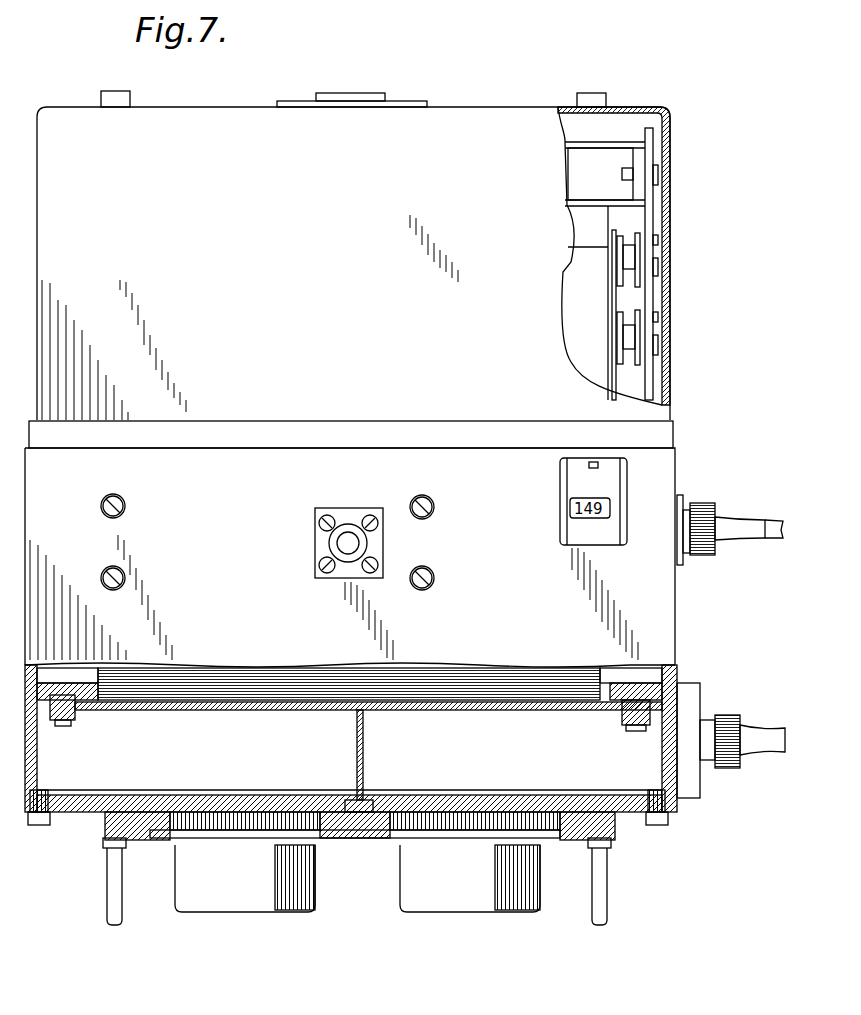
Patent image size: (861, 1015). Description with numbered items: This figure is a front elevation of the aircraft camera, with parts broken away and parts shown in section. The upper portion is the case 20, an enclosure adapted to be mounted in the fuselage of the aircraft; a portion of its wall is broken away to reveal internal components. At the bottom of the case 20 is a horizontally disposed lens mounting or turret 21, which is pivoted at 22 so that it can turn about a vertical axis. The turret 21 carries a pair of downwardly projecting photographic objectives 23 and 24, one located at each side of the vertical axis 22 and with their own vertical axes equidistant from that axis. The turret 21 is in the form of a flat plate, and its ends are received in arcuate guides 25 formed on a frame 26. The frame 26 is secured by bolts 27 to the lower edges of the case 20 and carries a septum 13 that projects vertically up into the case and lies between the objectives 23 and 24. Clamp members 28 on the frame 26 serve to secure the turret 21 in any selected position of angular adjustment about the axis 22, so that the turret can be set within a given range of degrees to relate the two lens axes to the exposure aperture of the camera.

The case 20 is at (652, 413).
The septum 13 is at (365, 727).
The lens mounting or turret 21 is at (385, 835).
The pivot (vertical axis) 22 is at (380, 815).
The photographic objective 23 is at (245, 891).
The photographic objective 24 is at (473, 901).
The arcuate guides 25 is at (130, 812).
The frame 26 is at (88, 812).
The bolts 27 is at (38, 828).
The clamp members 28 is at (612, 845).